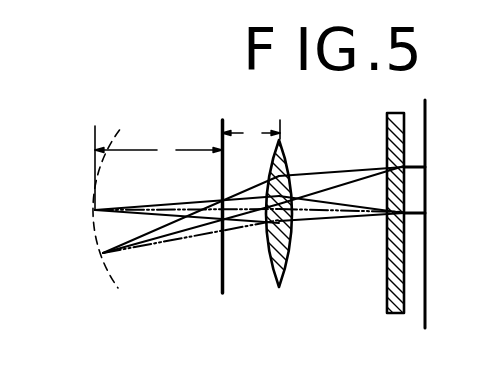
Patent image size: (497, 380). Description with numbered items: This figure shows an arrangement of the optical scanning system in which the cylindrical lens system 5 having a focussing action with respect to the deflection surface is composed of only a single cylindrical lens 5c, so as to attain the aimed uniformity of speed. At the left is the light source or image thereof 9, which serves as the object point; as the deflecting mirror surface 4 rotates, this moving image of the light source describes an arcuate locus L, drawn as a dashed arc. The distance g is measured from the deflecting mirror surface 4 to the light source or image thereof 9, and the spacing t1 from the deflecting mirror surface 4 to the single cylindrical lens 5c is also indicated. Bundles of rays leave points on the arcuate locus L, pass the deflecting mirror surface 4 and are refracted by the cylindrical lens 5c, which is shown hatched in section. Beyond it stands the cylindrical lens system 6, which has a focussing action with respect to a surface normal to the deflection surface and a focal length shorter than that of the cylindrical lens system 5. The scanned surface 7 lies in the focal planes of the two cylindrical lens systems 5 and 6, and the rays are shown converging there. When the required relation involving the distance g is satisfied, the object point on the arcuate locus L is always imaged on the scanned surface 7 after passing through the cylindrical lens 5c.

The light source or image thereof 9 is at (95, 210).
The arcuate locus L is at (108, 276).
The deflecting mirror surface 4 is at (222, 275).
The cylindrical lens system 5 is at (275, 231).
The single cylindrical lens 5c is at (292, 310).
The cylindrical lens system 6 is at (395, 314).
The scanned surface 7 is at (427, 306).
The distance from the deflecting mirror surface to the light source or image thereof g is at (158, 149).
The distance t1 between plane 4 and lens t1 is at (251, 132).